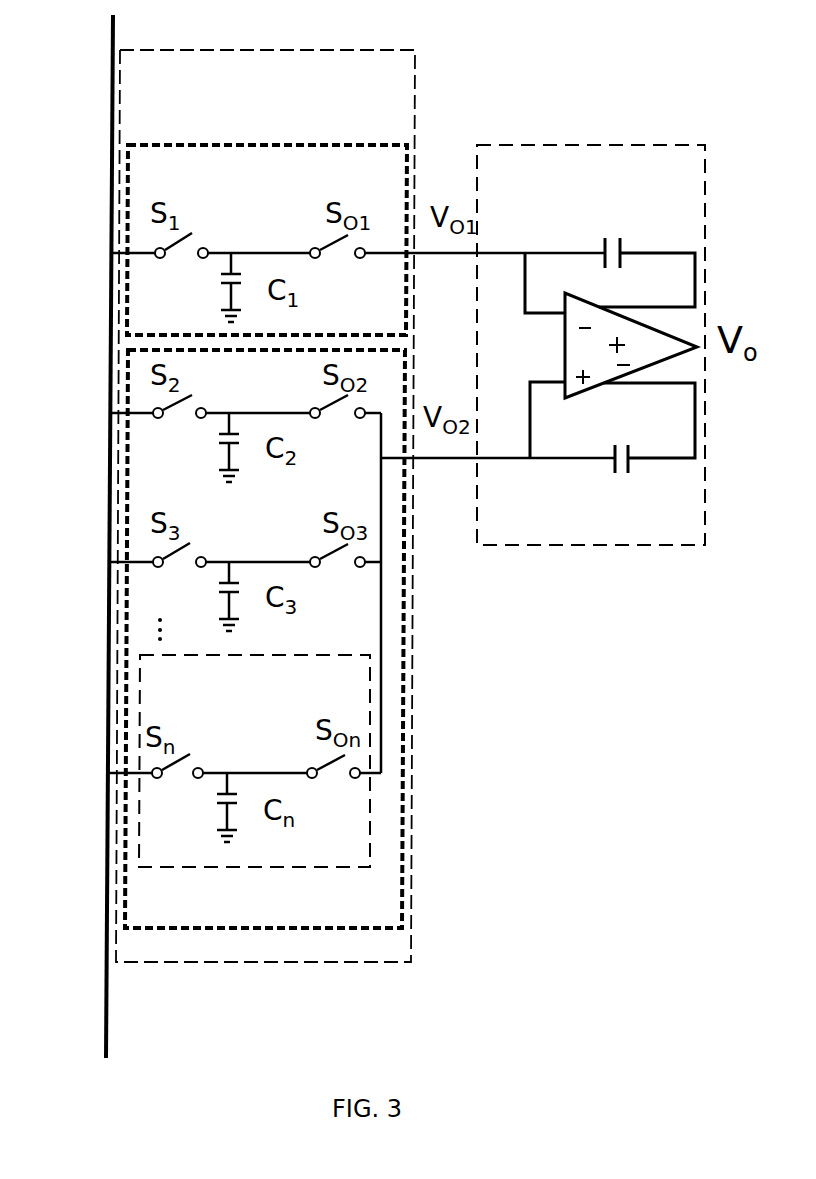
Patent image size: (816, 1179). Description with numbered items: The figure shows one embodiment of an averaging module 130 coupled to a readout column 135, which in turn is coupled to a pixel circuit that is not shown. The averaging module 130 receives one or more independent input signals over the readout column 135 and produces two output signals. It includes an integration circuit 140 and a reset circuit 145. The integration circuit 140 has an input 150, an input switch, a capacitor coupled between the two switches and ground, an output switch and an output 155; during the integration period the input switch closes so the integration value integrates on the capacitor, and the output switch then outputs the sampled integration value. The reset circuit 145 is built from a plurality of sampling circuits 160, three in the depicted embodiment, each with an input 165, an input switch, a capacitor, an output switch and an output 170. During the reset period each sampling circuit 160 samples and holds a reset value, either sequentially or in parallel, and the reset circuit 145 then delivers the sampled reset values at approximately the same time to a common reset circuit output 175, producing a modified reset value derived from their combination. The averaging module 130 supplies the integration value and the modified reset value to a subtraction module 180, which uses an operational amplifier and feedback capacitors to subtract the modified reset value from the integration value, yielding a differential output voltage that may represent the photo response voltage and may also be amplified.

The averaging module 130 is at (265, 506).
The readout column 135 is at (108, 1008).
The integration circuit 140 is at (267, 240).
The reset circuit 145 is at (265, 639).
The input 150 is at (148, 253).
The output 155 is at (388, 255).
The sampling circuit 160 is at (254, 761).
The input 165 is at (145, 773).
The output 170 is at (363, 776).
The common reset circuit output 175 is at (390, 460).
The subtraction module 180 is at (591, 345).